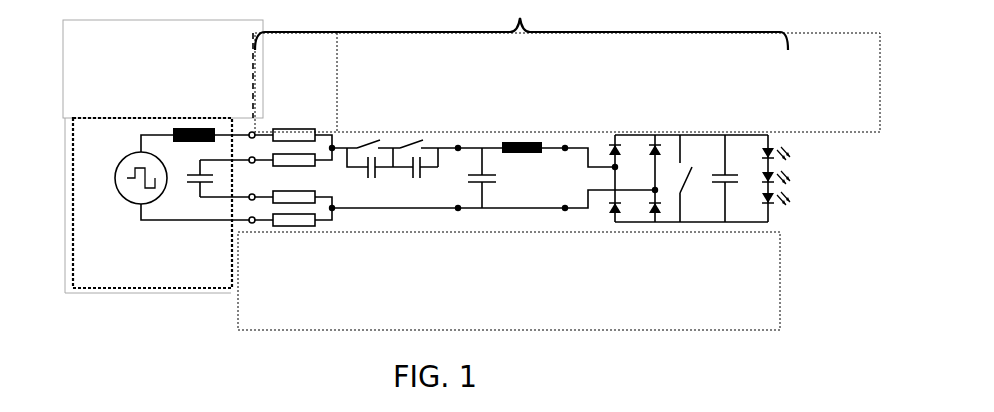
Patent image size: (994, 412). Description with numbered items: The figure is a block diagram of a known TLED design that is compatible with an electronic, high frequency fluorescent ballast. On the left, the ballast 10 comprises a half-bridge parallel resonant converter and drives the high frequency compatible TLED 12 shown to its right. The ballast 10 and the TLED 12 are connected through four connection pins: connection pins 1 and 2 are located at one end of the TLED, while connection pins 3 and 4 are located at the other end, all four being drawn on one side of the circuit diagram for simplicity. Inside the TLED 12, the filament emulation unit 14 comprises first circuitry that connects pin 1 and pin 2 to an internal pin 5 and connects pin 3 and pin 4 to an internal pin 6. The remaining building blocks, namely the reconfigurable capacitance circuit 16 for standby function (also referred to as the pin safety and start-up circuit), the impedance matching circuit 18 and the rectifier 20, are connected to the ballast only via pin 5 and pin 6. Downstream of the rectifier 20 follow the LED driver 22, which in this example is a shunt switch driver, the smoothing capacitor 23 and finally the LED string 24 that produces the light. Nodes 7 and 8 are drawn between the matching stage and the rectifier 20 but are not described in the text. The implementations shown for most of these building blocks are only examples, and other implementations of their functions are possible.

The connection pin 1 is at (252, 131).
The connection pin 2 is at (250, 157).
The connection pin 3 is at (255, 200).
The connection pin 4 is at (253, 224).
The pin 5 is at (335, 143).
The pin 6 is at (338, 214).
The third node 7 is at (567, 144).
The fourth node 8 is at (565, 212).
The ballast 10 is at (143, 118).
The TLED 12 is at (567, 66).
The filament emulation unit 14 is at (285, 106).
The reconfigurable capacitance circuit 16 is at (388, 116).
The impedance matching circuit 18 is at (510, 117).
The rectifier 20 is at (627, 111).
The LED driver 22 is at (691, 111).
The smoothing capacitor 23 is at (742, 116).
The LED string 24 is at (783, 119).